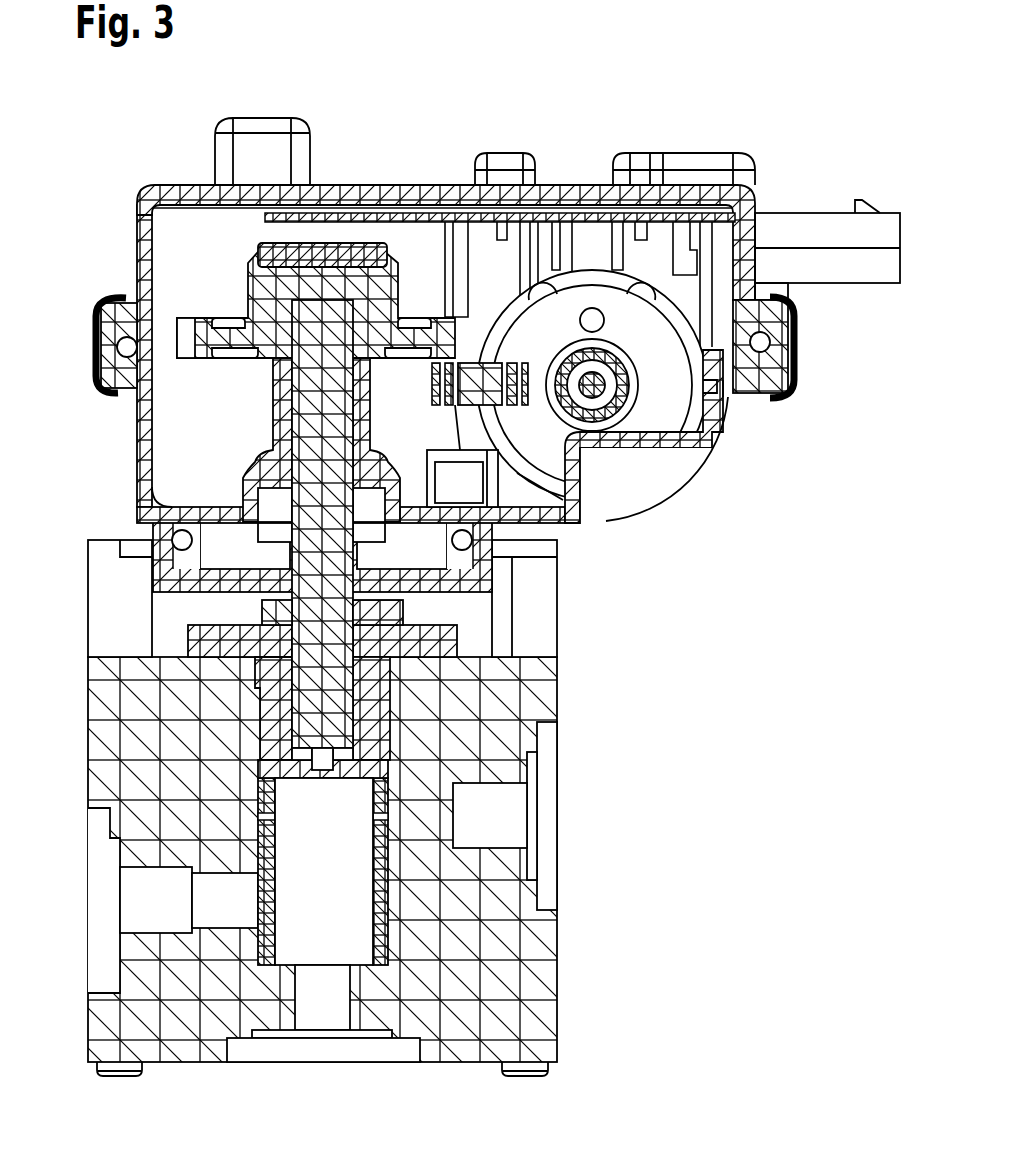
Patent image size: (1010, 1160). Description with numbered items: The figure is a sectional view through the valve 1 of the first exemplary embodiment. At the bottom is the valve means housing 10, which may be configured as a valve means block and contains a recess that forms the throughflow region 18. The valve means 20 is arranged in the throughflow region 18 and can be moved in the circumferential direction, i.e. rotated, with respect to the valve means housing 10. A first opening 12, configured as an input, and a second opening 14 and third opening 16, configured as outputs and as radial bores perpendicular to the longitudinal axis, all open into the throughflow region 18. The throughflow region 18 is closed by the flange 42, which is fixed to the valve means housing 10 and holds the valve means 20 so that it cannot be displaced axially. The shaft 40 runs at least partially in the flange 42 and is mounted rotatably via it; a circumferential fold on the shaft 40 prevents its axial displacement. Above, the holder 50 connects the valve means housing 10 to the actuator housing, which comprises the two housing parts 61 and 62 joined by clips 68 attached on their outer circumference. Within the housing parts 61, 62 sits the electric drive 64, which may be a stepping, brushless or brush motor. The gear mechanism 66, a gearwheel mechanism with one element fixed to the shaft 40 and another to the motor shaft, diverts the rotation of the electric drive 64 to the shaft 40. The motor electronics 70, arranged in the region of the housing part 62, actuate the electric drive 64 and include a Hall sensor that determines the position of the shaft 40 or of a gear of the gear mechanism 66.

The valve 1 is at (783, 117).
The valve means housing 10 is at (527, 1003).
The first opening 12 is at (327, 1048).
The second opening 14 is at (135, 898).
The third opening 16 is at (517, 805).
The throughflow region 18 is at (338, 873).
The valve means 20 is at (388, 920).
The shaft 40 is at (392, 612).
The flange 42 is at (388, 678).
The holder 50 is at (533, 575).
The housing part 61 is at (146, 455).
The housing part 62 is at (148, 226).
The electric drive 64 is at (657, 404).
The gear mechanism 66 is at (486, 350).
The clips 68 is at (92, 335).
The motor electronics 70 is at (545, 213).